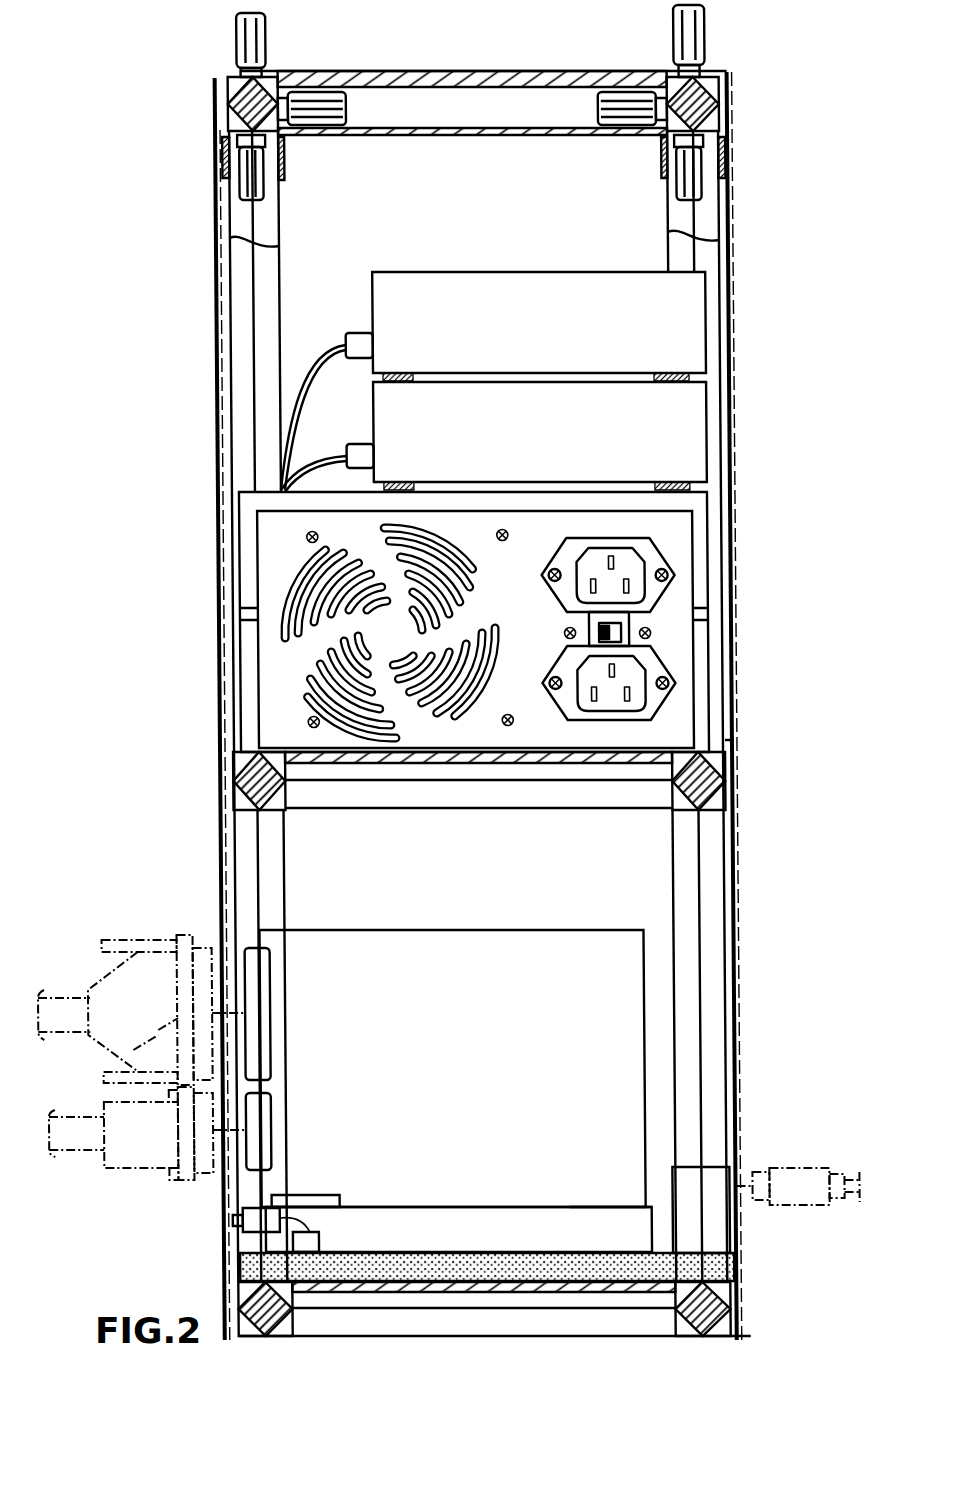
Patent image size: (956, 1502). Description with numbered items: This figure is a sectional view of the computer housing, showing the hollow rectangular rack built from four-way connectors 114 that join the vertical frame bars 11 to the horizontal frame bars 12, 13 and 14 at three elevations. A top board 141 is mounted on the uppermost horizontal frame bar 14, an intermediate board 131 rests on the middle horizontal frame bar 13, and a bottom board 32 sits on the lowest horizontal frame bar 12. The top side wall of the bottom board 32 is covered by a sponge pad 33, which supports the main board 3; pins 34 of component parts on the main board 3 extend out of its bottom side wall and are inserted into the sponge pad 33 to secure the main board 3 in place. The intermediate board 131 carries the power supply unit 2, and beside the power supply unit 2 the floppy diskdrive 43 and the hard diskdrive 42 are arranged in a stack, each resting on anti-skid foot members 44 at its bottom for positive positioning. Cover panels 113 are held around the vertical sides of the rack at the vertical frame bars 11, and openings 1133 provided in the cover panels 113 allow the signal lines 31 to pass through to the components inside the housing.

The vertical frame bar 11 is at (243, 378).
The horizontal frame bar 12 is at (447, 1322).
The horizontal frame bar 13 is at (630, 792).
The horizontal frame bar 14 is at (420, 102).
The cover panel 113 is at (733, 513).
The four-way connector 114 is at (718, 85).
The intermediate board 131 is at (667, 752).
The opening 1133 is at (735, 745).
The top board 141 is at (492, 84).
The power supply unit 2 is at (275, 551).
The main board 3 is at (237, 1232).
The signal line 31 is at (122, 1118).
The bottom board 32 is at (531, 1256).
The sponge pad 33 is at (740, 1268).
The pin 34 is at (617, 1254).
The hard diskdrive 42 is at (690, 424).
The floppy diskdrive 43 is at (690, 302).
The anti-skid foot member 44 is at (672, 373).